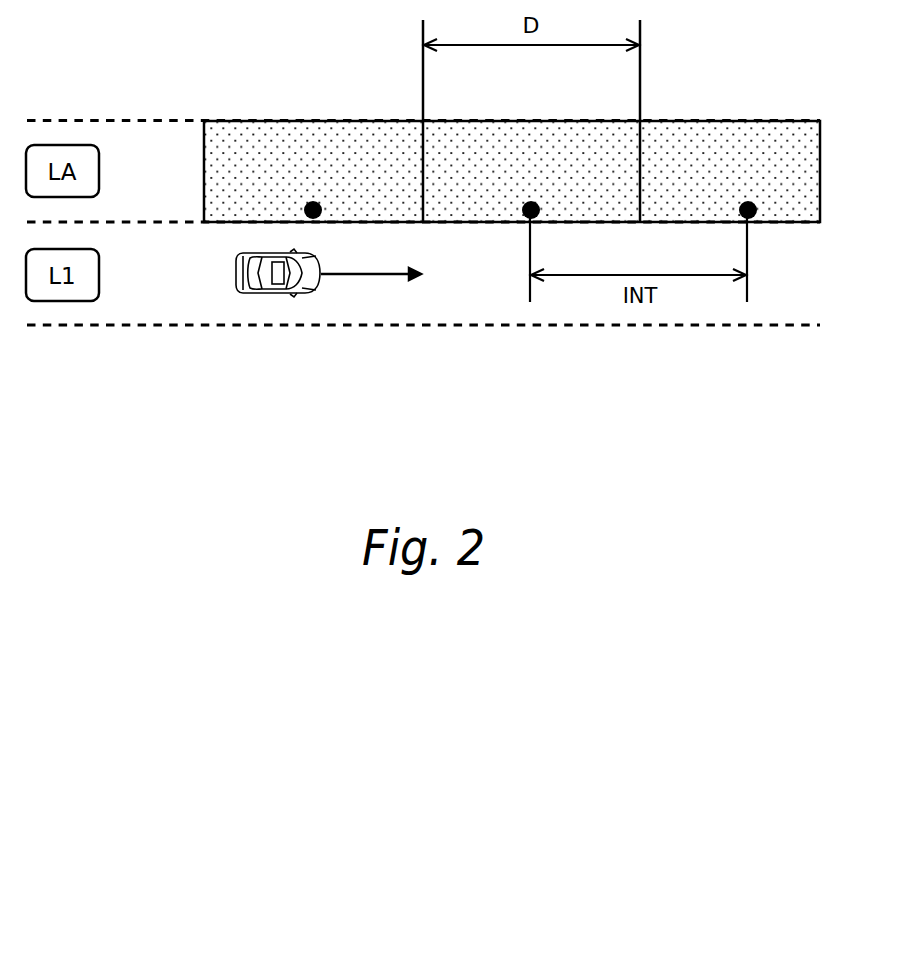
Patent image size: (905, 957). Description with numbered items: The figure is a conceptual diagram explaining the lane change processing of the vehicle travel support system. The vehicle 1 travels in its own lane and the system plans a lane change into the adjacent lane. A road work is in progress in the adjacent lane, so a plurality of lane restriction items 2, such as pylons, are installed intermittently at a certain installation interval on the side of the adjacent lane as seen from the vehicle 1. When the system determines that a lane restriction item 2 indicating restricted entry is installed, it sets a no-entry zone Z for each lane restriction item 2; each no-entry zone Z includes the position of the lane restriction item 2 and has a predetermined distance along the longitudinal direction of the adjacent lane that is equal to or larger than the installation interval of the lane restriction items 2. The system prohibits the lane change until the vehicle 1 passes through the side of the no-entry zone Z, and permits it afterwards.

The vehicle 1 is at (281, 295).
The lane restriction item 2 is at (757, 212).
The no-entry zone Z is at (742, 136).